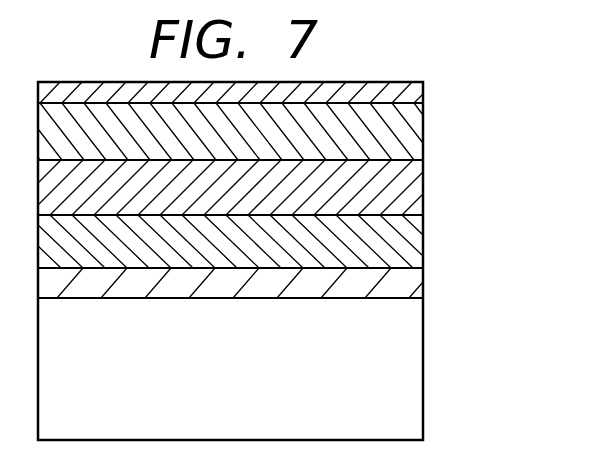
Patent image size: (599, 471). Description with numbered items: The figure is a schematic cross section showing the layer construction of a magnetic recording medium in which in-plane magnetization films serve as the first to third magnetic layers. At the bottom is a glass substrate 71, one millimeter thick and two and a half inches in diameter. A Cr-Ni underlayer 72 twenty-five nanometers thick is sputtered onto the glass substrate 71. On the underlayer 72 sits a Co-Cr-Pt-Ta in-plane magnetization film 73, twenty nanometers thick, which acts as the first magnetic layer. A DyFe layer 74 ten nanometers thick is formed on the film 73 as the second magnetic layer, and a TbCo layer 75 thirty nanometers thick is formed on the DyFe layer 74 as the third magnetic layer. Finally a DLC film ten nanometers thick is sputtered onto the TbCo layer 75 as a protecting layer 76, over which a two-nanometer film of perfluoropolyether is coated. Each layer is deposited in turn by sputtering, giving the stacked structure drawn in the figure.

The glass substrate 71 is at (417, 334).
The underlayer 72 is at (417, 278).
The in-plane magnetization film 73 is at (417, 240).
The DyFe layer 74 is at (417, 185).
The TbCo layer 75 is at (417, 130).
The protecting layer 76 is at (423, 92).